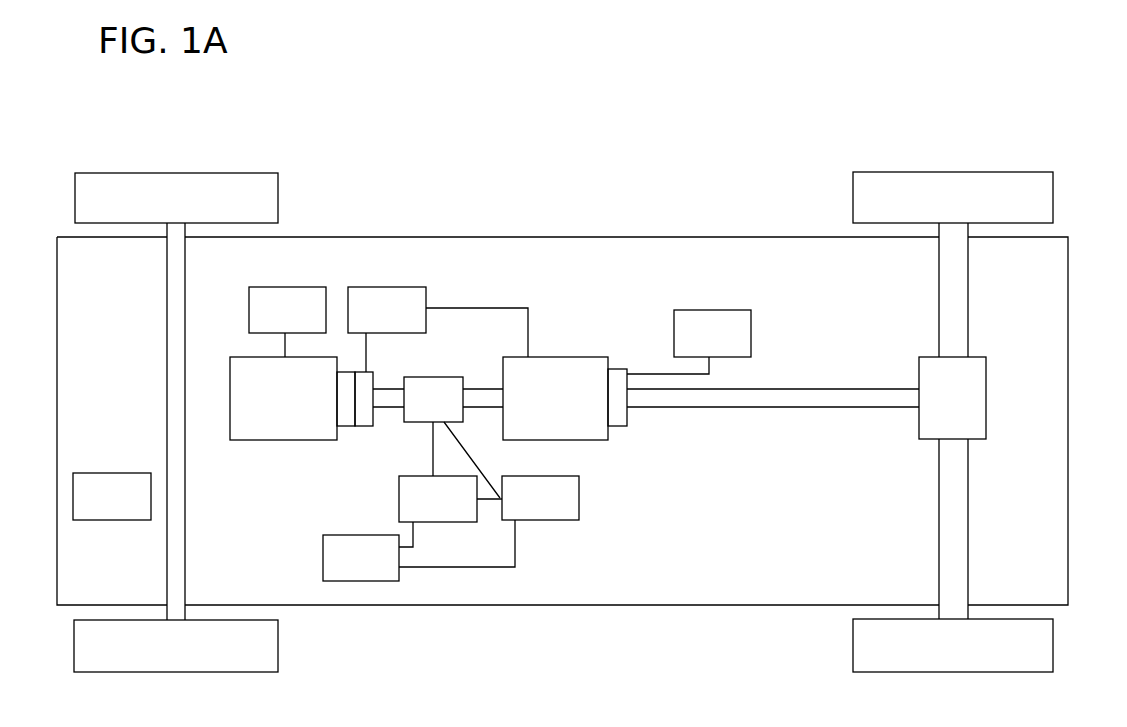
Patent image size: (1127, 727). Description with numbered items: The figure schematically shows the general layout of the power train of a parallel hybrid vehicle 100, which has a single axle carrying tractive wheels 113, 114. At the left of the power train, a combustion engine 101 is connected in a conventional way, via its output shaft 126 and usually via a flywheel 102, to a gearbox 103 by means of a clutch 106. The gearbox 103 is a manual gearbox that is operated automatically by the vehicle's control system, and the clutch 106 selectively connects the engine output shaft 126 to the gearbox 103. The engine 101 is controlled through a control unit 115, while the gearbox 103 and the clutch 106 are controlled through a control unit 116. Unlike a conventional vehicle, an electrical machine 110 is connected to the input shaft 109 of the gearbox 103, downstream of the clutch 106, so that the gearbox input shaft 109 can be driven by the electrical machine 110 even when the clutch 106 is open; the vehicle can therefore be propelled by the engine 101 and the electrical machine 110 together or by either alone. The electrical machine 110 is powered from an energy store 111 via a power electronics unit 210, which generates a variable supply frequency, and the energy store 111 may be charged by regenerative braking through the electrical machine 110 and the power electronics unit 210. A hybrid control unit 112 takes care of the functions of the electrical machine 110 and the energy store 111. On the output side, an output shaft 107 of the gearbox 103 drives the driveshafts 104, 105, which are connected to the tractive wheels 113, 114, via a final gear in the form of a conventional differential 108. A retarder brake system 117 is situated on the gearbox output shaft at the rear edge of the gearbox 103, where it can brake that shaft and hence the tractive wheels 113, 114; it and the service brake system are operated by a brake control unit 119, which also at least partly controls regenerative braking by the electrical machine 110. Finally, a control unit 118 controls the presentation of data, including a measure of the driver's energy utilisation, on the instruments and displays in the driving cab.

The hybrid vehicle 100 is at (487, 83).
The combustion engine 101 is at (258, 432).
The flywheel 102 is at (350, 427).
The clutch 106 is at (363, 424).
The output shaft of the engine 126 is at (392, 410).
The electrical machine 110 is at (443, 383).
The input shaft of the gearbox 109 is at (470, 410).
The gearbox 103 is at (557, 365).
The retarder brake system 117 is at (618, 377).
The brake control unit 119 is at (715, 320).
The output shaft of the gearbox 107 is at (848, 403).
The differential 108 is at (983, 393).
The driveshaft 104 is at (958, 287).
The driveshaft 105 is at (963, 533).
The tractive wheel 113 is at (1050, 188).
The tractive wheel 114 is at (1050, 647).
The control unit 115 is at (288, 317).
The control unit 116 is at (415, 300).
The energy store 111 is at (457, 512).
The hybrid control unit 112 is at (542, 510).
The power electronics unit 210 is at (337, 546).
The control unit 118 is at (113, 508).